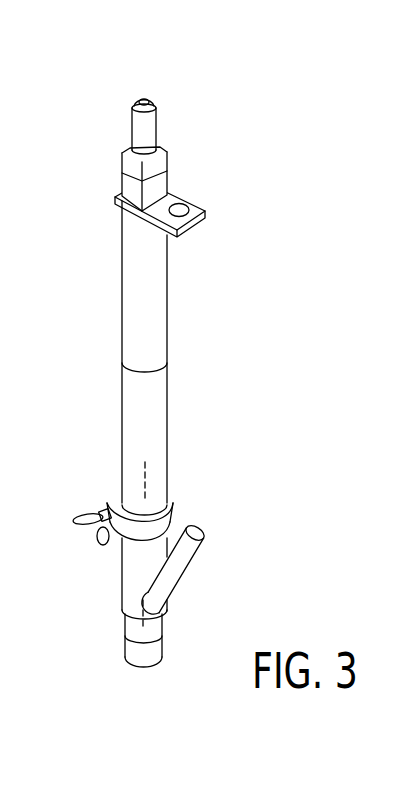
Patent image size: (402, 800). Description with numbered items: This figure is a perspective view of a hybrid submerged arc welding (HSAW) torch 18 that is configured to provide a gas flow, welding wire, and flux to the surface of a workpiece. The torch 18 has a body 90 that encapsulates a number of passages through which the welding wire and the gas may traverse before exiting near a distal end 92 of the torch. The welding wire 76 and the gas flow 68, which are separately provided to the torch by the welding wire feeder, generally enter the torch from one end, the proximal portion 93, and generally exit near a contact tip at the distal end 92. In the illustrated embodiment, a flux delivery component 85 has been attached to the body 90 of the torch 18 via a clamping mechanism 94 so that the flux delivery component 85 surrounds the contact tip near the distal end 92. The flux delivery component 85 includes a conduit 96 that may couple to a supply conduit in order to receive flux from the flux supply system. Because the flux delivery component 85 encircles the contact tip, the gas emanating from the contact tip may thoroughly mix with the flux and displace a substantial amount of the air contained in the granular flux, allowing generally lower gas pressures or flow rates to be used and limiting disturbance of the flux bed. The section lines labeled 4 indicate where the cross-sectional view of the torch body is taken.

The hybrid submerged arc welding (HSAW) torch 18 is at (240, 192).
The proximal end portion 93 is at (136, 50).
The gas flow 68 is at (154, 88).
The welding wire 76 is at (137, 91).
The body 90 is at (170, 402).
The clamping mechanism 94 is at (102, 501).
The conduit 96 is at (210, 517).
The flux delivery component 85 is at (189, 584).
The distal end 92 is at (105, 654).
The section line 4- 4 is at (145, 462).